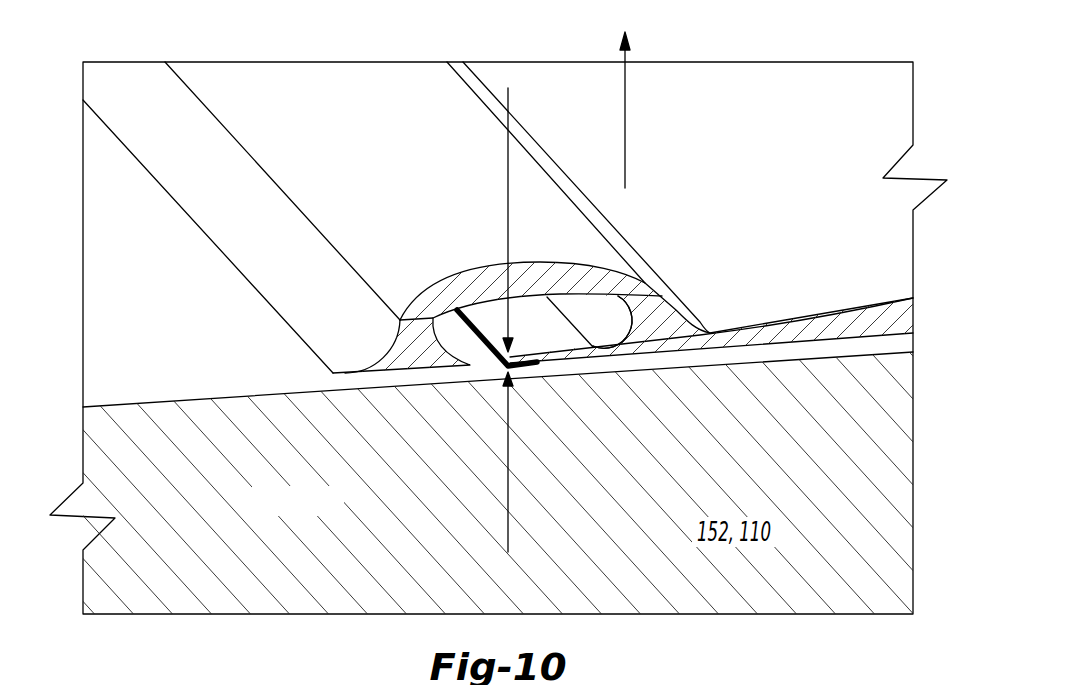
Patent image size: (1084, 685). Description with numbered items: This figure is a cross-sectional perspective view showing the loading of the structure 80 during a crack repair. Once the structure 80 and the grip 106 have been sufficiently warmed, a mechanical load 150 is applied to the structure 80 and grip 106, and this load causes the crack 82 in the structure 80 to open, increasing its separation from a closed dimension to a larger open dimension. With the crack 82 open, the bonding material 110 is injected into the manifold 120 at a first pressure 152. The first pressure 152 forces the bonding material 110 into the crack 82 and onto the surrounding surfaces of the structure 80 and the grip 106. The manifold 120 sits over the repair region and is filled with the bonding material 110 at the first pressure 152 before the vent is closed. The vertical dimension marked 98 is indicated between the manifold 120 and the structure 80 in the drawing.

The structure 80 is at (167, 614).
The crack 82 is at (480, 345).
The channel gap 98 is at (509, 337).
The grip 106 is at (787, 87).
The bonding material 110 is at (659, 421).
The manifold 120 is at (332, 100).
The mechanical load 150 is at (625, 94).
The first pressure 152 is at (545, 330).